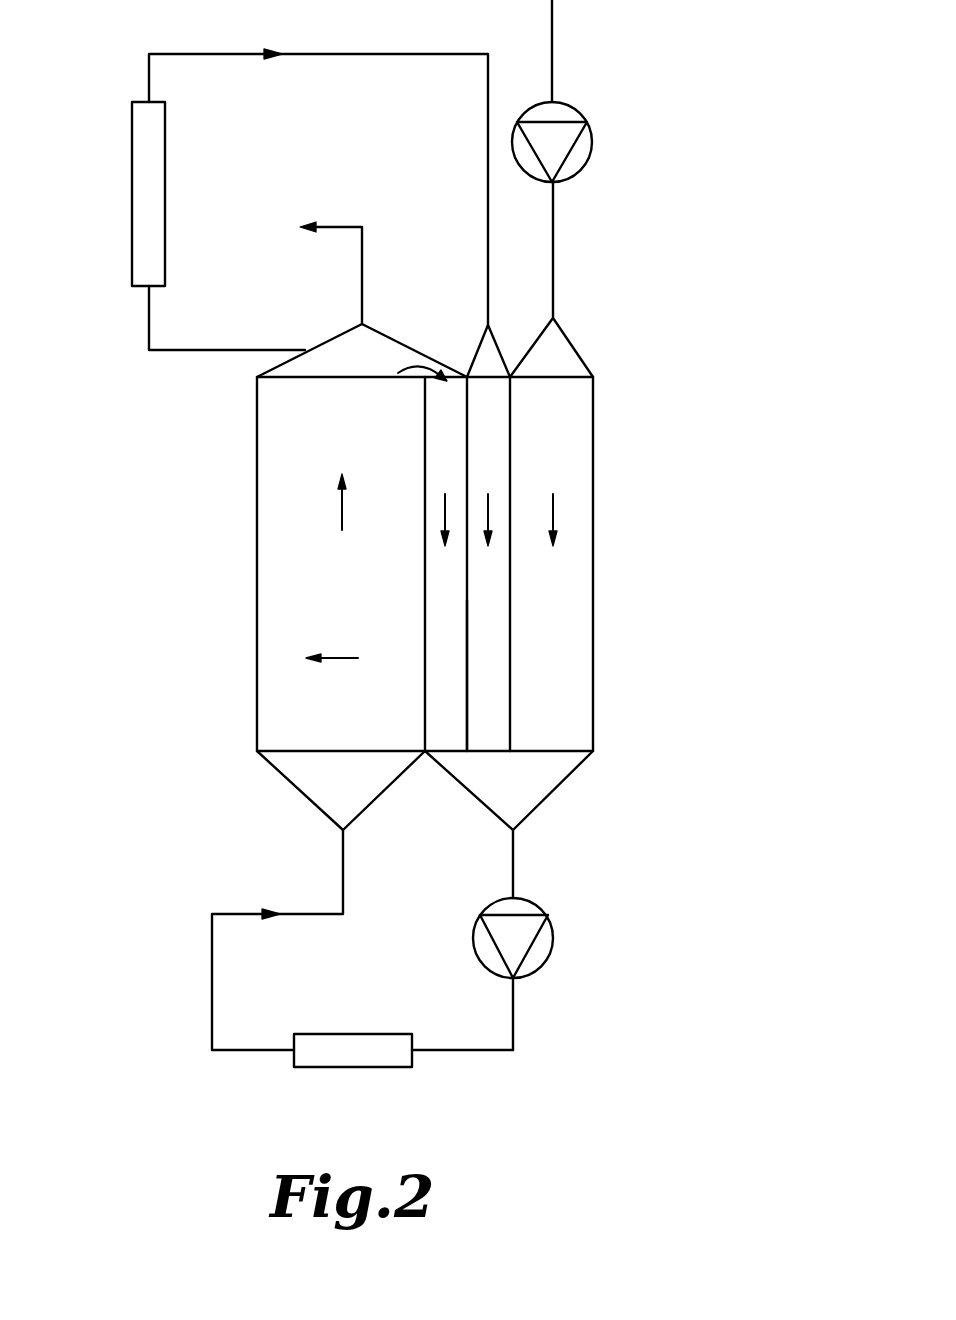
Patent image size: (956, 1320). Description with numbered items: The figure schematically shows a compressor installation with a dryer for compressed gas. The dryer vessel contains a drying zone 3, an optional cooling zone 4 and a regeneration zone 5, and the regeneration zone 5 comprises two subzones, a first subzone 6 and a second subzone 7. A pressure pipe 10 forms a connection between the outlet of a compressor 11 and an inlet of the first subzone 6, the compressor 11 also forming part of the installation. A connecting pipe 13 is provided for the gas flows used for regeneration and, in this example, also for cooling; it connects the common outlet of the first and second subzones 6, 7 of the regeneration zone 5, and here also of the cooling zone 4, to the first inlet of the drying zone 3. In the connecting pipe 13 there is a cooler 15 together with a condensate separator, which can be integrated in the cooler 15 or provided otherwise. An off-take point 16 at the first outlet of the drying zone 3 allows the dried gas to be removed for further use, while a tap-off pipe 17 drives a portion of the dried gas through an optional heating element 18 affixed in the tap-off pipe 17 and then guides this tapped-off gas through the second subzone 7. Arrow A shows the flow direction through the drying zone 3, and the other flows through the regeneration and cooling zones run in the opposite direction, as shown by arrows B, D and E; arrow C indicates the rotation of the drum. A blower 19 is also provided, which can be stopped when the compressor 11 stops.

The drying zone 3 is at (297, 592).
The cooling zone 4 is at (448, 595).
The regeneration zone 5 is at (547, 770).
The first subzone 6 is at (578, 423).
The second subzone 7 is at (483, 690).
The pressure pipe 10 is at (553, 263).
The compressor 11 is at (592, 158).
The connecting pipe 13 is at (513, 866).
The cooler 15 is at (355, 1058).
The off-take point 16 is at (362, 324).
The tap-off pipe 17 is at (195, 352).
The heating element 18 is at (132, 240).
The blower 19 is at (548, 975).